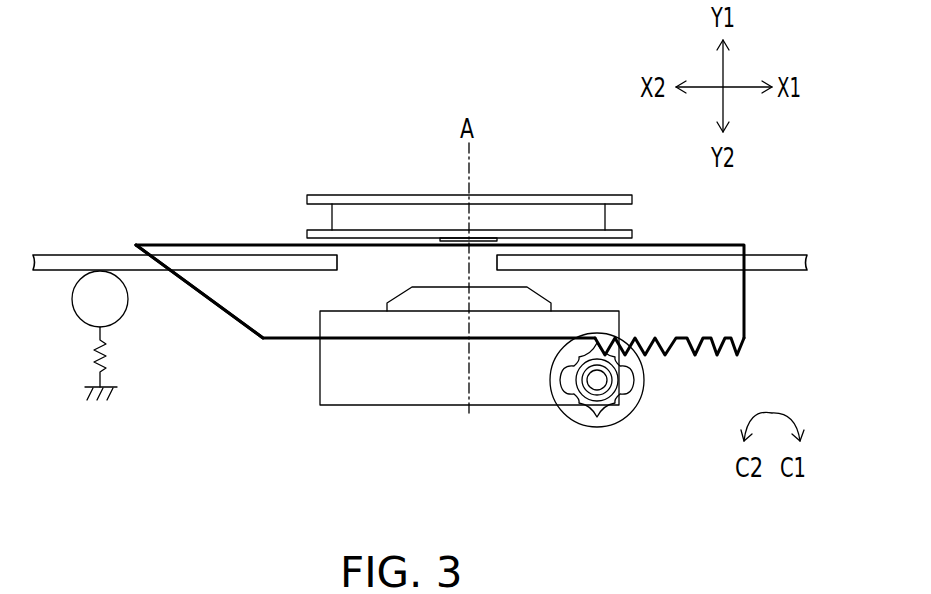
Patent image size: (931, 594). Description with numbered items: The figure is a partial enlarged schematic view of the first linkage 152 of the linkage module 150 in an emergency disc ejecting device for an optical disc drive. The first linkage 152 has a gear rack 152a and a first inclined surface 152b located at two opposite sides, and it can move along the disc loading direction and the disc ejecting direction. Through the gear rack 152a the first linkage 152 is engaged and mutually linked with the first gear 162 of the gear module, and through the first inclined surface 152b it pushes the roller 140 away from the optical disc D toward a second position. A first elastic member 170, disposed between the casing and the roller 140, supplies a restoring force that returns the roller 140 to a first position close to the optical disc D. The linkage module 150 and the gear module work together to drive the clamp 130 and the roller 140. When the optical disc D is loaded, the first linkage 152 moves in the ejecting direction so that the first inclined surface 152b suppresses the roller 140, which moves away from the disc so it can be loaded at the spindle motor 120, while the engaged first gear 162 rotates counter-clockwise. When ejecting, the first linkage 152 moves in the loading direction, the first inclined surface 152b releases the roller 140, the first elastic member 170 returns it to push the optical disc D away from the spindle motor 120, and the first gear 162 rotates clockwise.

The linkage module 150 is at (222, 150).
The first linkage 152 is at (267, 305).
The gear rack 152a is at (675, 354).
The first inclined surface 152b is at (200, 293).
The clamp 130 is at (395, 218).
The spindle motor 120 is at (373, 392).
The first gear 162 is at (598, 385).
The roller 140 is at (82, 316).
The first elastic member 170 is at (92, 356).
The optical disc D is at (97, 261).